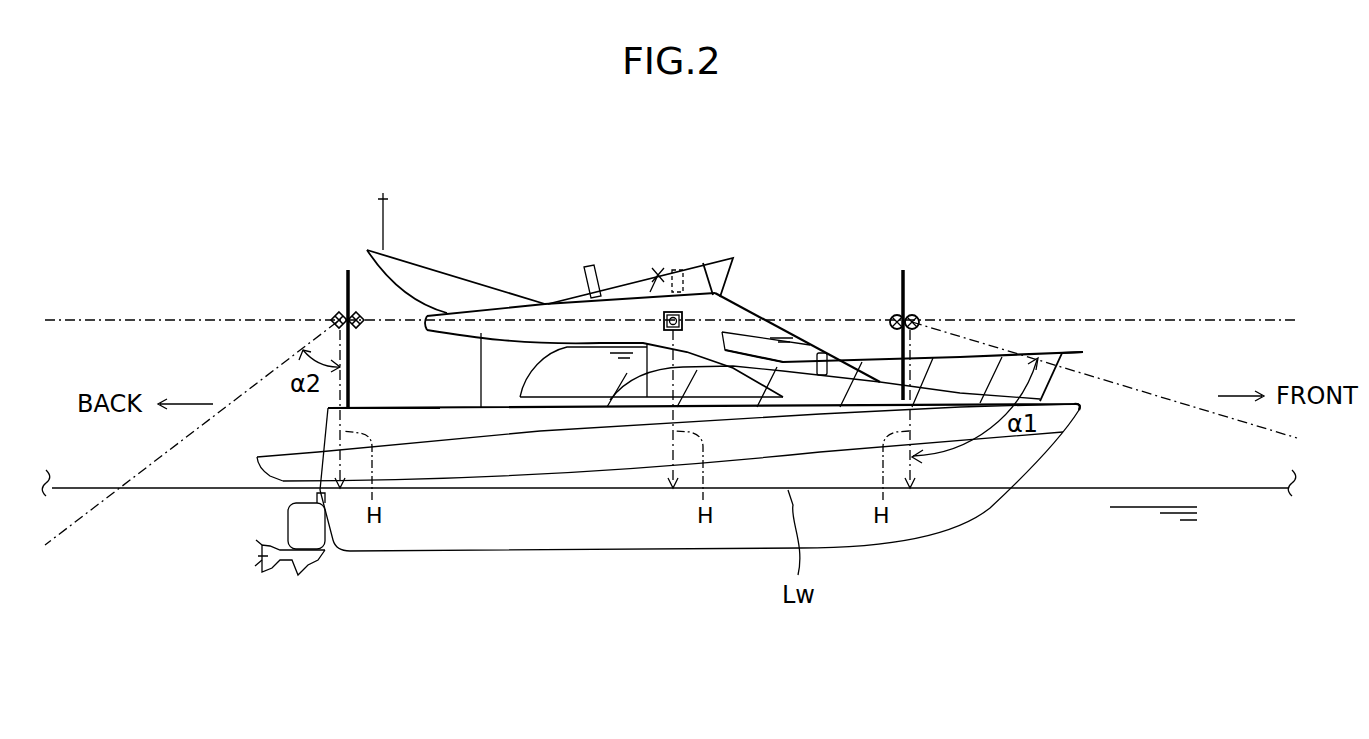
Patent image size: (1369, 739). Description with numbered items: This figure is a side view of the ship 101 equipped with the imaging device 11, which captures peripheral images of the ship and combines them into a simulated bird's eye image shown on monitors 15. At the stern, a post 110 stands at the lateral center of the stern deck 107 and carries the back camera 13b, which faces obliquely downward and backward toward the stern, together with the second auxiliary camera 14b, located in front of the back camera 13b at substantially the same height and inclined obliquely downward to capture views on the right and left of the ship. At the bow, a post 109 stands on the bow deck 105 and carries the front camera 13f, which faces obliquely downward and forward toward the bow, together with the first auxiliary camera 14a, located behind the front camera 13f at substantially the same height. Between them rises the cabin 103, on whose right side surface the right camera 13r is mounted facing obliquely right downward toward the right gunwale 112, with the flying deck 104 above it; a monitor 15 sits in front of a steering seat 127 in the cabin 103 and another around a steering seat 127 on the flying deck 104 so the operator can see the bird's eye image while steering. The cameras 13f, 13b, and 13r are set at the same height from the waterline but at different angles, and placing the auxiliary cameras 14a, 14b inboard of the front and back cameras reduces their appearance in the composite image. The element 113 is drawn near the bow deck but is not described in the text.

The imaging device 11 is at (1045, 281).
The back camera 13b is at (333, 313).
The front camera 13f is at (916, 313).
The right camera 13r is at (683, 318).
The first auxiliary camera 14a is at (897, 313).
The second auxiliary camera 14b is at (374, 303).
The monitor 15 is at (677, 268).
The ship 101 is at (1104, 371).
The cabin 103 is at (748, 310).
The flying deck 104 is at (563, 297).
The bow deck 105 is at (883, 400).
The stern deck 107 is at (393, 442).
The post 109 is at (906, 290).
The post 110 is at (347, 290).
The right gunwale 112 is at (580, 432).
The bulwark 113 is at (1053, 389).
The steering seat 127 is at (588, 262).